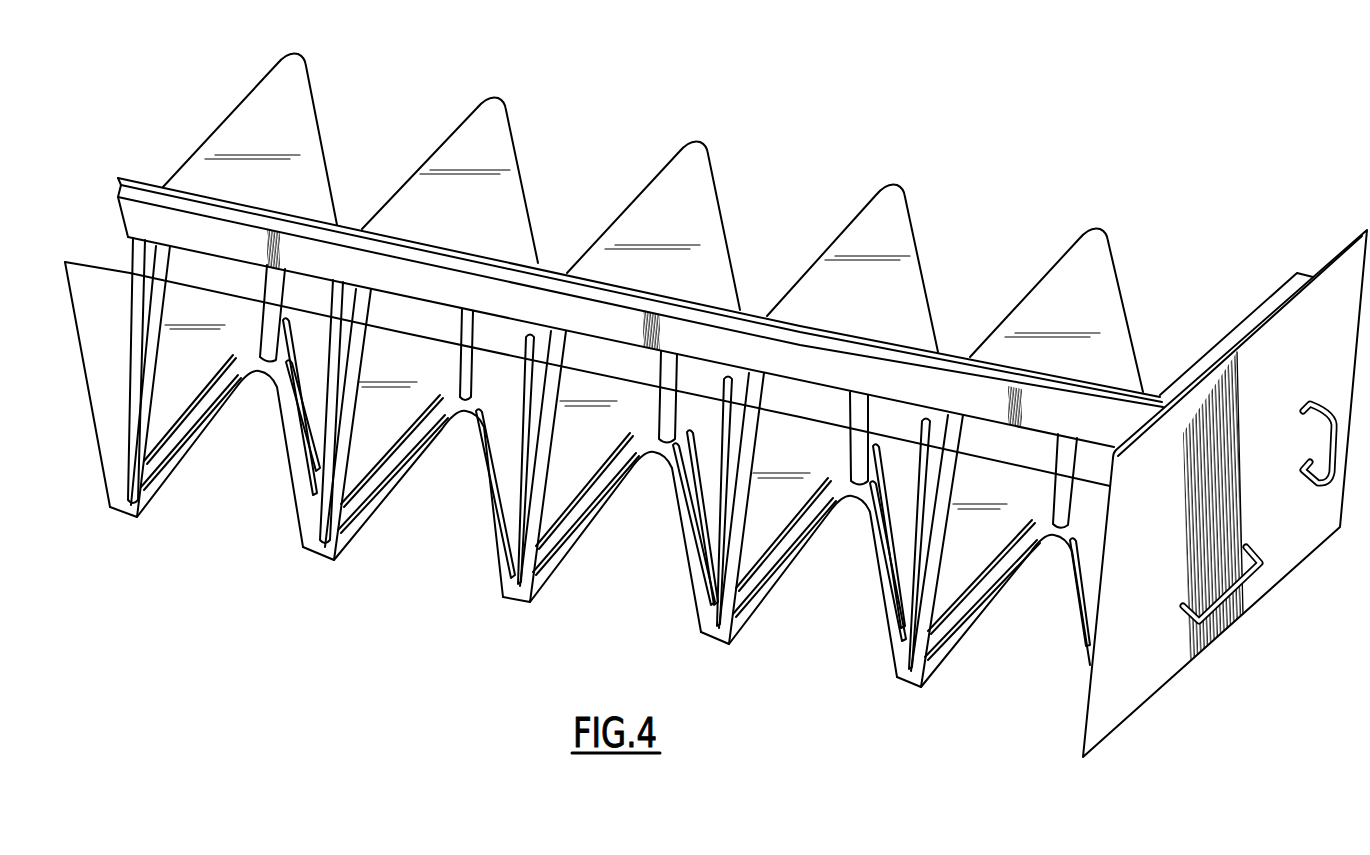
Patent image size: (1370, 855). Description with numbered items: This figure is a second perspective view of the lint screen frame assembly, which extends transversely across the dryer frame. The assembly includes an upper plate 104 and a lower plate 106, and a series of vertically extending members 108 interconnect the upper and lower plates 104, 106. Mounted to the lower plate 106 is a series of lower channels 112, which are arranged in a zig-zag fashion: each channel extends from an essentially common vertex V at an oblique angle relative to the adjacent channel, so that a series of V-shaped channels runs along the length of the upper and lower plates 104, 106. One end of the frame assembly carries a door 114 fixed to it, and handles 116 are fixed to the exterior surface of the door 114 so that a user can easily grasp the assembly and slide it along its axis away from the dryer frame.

The upper plate 104 is at (903, 238).
The lower plate 106 is at (731, 633).
The vertically extending members 108 is at (475, 410).
The lower channels 112 is at (780, 527).
The door 114 is at (1158, 693).
The handles 116 is at (1317, 487).
The vertex V is at (683, 407).